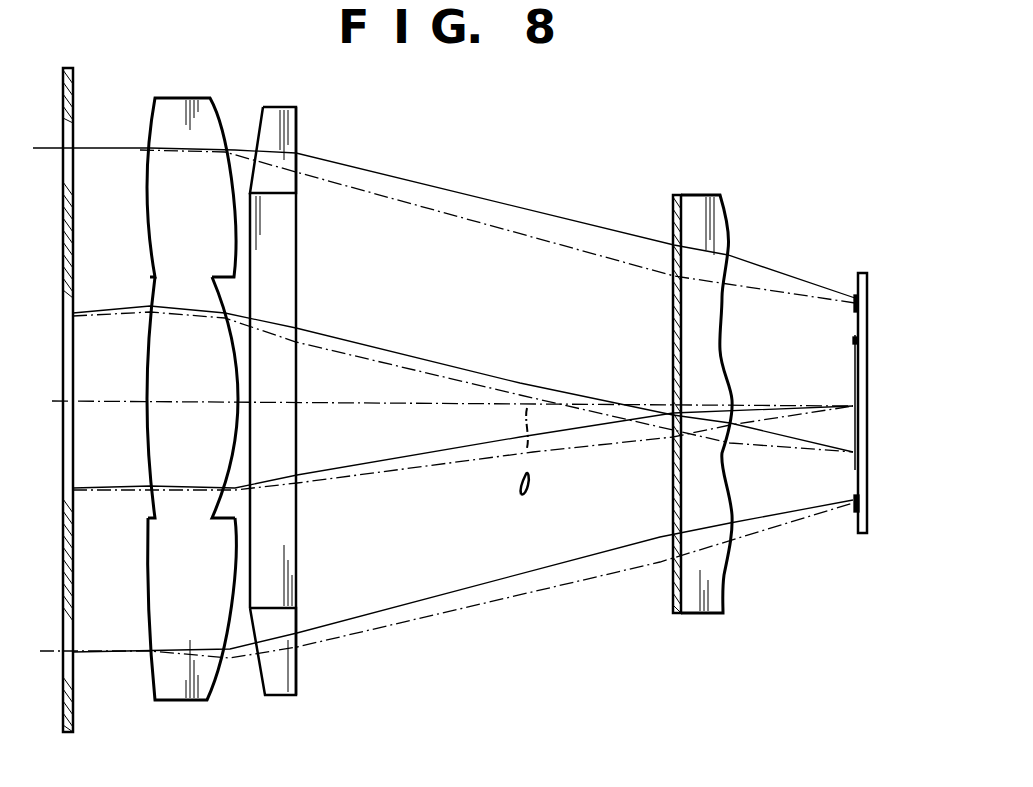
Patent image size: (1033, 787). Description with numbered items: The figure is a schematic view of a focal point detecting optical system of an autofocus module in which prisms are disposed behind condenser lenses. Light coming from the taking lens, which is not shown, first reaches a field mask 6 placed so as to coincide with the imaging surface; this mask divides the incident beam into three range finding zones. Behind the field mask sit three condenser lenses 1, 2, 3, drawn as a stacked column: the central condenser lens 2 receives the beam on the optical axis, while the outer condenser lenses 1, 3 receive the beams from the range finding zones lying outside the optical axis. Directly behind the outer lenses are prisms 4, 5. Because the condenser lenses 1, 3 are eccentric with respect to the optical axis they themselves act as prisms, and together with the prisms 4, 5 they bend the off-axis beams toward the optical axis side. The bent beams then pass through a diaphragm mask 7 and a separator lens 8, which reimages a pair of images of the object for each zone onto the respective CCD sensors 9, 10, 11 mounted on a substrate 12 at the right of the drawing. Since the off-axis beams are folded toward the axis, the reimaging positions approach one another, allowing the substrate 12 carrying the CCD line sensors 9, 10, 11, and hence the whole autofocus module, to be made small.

The condenser lens 1 is at (150, 213).
The condenser lens 2 is at (152, 365).
The condenser lens 3 is at (178, 701).
The prism 4 is at (297, 135).
The prism 5 is at (286, 697).
The field mask 6 is at (74, 100).
The diaphragm mask 7 is at (672, 213).
The separator lens 8 is at (698, 195).
The CCD sensor 9 is at (855, 297).
The CCD sensor 10 is at (853, 366).
The CCD sensor 11 is at (852, 505).
The substrate 12 is at (866, 338).